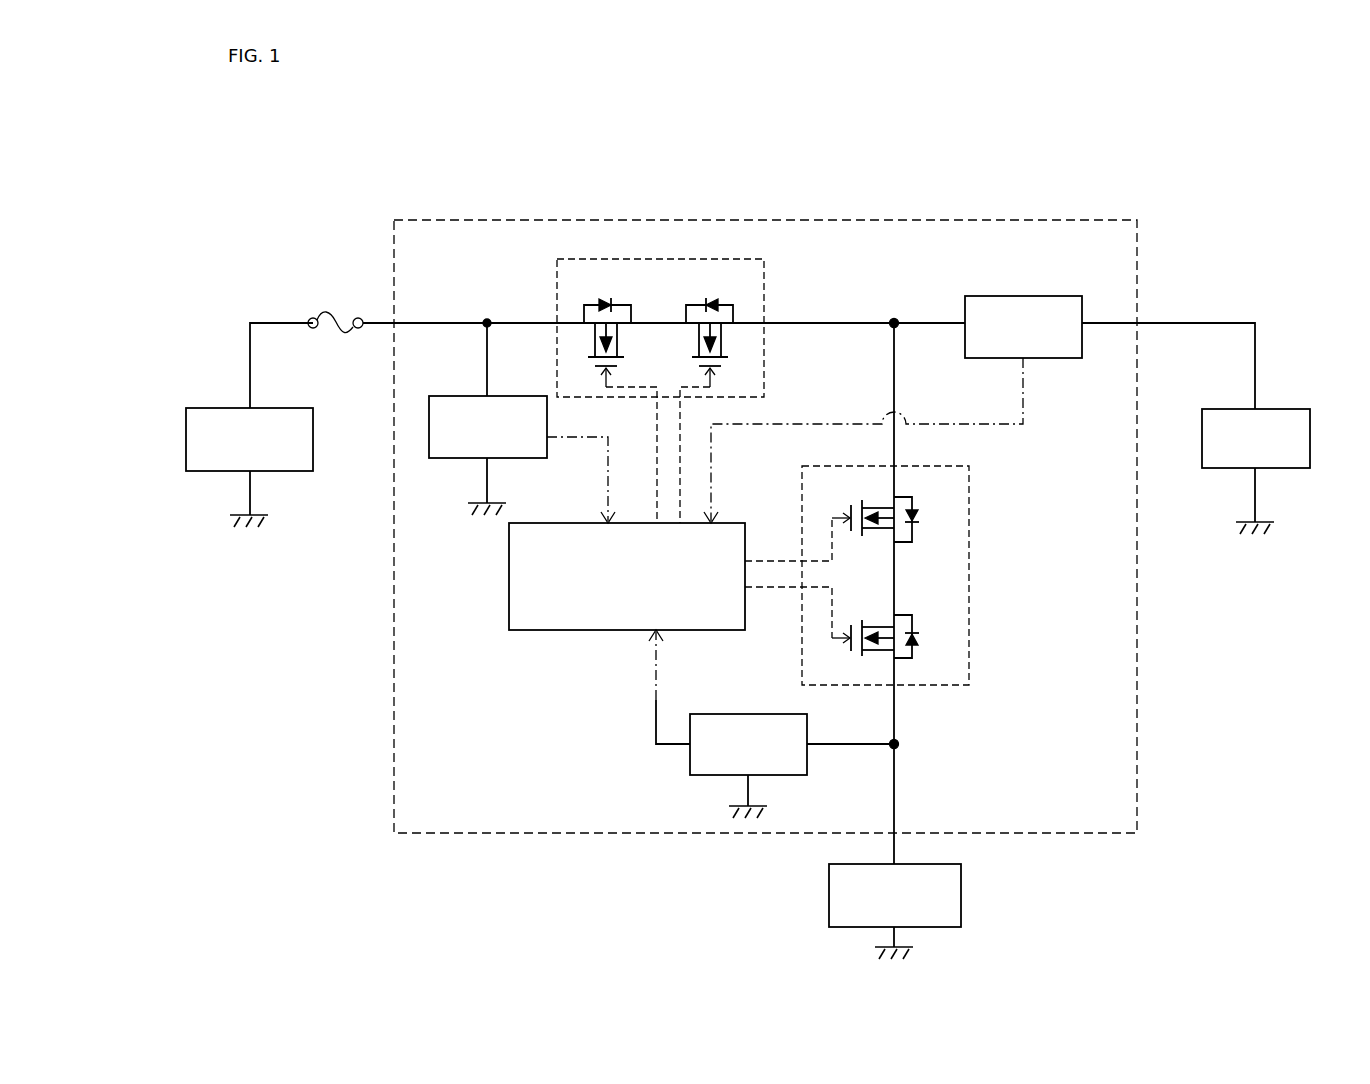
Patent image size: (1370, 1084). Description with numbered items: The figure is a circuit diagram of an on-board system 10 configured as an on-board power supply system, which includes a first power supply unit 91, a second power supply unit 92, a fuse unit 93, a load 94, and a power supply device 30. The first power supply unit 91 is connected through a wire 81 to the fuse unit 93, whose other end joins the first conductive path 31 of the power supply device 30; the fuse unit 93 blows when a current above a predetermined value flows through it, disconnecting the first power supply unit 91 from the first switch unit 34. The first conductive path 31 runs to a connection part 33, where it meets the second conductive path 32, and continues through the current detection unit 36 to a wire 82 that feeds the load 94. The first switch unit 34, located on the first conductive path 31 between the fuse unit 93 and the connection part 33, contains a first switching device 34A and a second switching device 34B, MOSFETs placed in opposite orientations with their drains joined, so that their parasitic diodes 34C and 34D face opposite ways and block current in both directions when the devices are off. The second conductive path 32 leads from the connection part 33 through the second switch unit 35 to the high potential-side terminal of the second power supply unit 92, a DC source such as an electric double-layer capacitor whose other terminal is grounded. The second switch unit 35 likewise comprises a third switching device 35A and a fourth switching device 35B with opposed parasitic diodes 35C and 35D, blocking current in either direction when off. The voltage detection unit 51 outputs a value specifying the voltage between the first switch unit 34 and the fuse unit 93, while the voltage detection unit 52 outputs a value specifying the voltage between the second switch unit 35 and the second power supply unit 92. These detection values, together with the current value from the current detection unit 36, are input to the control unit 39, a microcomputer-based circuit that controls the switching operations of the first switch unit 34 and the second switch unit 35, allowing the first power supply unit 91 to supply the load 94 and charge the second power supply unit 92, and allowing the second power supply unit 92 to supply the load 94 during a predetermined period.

The on-board system 10 is at (1152, 213).
The power supply device 30 is at (910, 220).
The first conductive path 31 is at (516, 323).
The second conductive path 32 is at (896, 381).
The connection part 33 is at (893, 320).
The first switch unit 34 is at (648, 259).
The first switching device 34A is at (606, 284).
The second switching device 34B is at (705, 284).
The parasitic diode 34C is at (600, 299).
The parasitic diode 34D is at (716, 300).
The second switch unit 35 is at (972, 566).
The third switching device 35A is at (934, 491).
The fourth switching device 35B is at (935, 665).
The parasitic diode 35C is at (920, 519).
The parasitic diode 35D is at (920, 637).
The current detection unit 36 is at (1050, 358).
The control unit 39 is at (552, 630).
The voltage detection unit 51 is at (447, 458).
The voltage detection unit 52 is at (690, 760).
The wire 81 is at (277, 323).
The wire 82 is at (1210, 323).
The first power supply unit 91 is at (205, 408).
The second power supply unit 92 is at (961, 888).
The fuse unit 93 is at (328, 306).
The load 94 is at (1285, 409).